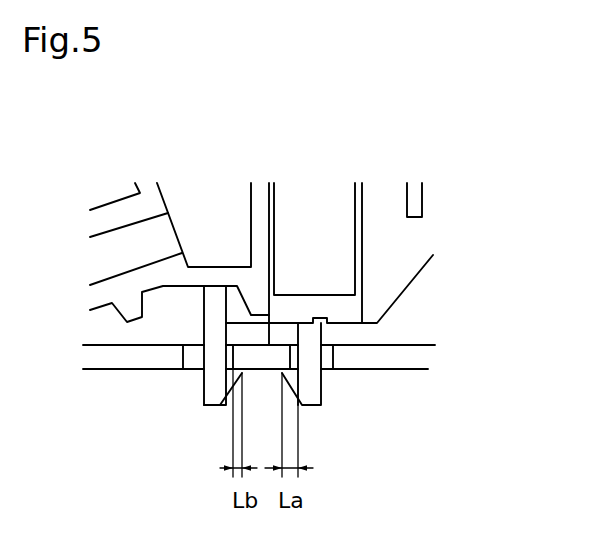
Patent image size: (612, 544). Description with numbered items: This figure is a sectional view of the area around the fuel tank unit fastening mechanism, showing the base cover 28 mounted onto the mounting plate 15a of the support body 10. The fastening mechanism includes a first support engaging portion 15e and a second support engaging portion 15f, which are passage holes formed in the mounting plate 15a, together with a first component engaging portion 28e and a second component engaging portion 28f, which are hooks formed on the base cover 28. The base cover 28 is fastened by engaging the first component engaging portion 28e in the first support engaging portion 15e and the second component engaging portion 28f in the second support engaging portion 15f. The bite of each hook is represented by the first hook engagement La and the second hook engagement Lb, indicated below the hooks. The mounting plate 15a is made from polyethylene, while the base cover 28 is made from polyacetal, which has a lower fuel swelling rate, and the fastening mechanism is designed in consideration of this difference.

The base cover 28 is at (402, 276).
The second component engaging portion 28f is at (213, 397).
The first component engaging portion 28e is at (315, 400).
The mounting plate 15a is at (407, 350).
The support body 10 is at (329, 345).
The second support engaging portion 15f is at (195, 358).
The first support engaging portion 15e is at (328, 362).